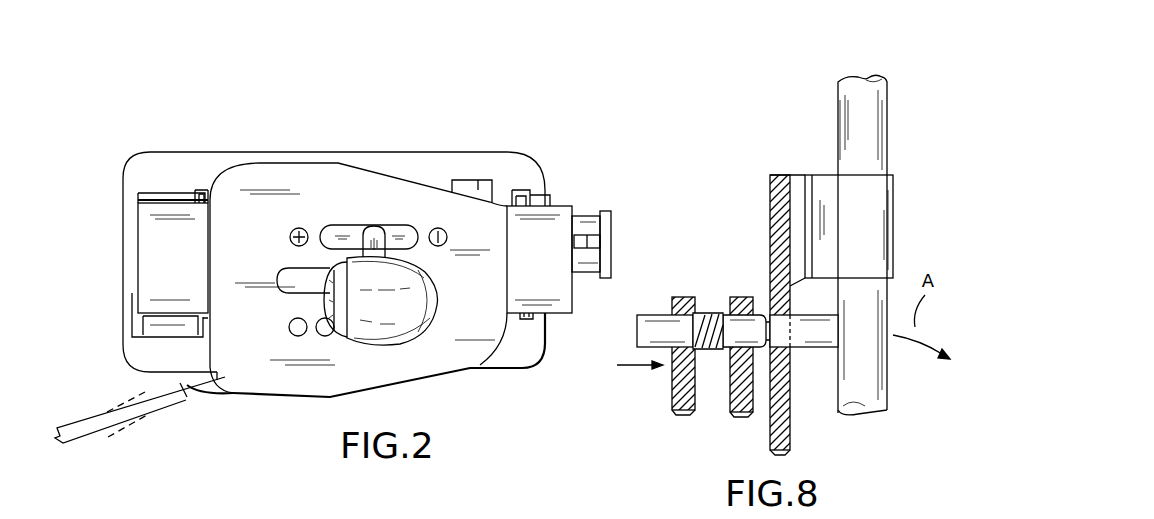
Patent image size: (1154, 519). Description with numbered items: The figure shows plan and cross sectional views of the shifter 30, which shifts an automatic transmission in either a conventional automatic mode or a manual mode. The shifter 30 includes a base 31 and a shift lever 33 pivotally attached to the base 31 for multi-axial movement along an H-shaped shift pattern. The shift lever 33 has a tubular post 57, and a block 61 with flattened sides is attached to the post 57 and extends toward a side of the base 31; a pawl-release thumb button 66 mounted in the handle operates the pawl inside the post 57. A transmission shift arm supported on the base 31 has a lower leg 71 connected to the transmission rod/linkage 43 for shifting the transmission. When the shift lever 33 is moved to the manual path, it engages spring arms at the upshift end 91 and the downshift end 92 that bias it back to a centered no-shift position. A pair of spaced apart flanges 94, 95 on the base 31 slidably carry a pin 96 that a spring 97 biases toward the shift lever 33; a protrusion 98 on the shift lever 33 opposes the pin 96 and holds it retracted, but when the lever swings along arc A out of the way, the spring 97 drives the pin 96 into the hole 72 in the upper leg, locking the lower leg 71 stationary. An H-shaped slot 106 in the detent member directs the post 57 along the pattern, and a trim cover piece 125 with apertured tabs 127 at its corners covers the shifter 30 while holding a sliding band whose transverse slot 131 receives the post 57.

In FIG. 2, the shifter 30 is at (232, 106).
In FIG. 2, the base 31 is at (508, 144).
In FIG. 2, the shift lever 33 is at (432, 328).
In FIG. 8, the shift lever 33 is at (838, 108).
In FIG. 2, the transmission rod/linkage 43 is at (170, 410).
In FIG. 8, the tubular post 57 is at (888, 118).
In FIG. 8, the block 61 is at (805, 173).
In FIG. 2, the pawl-release thumb button 66 is at (293, 308).
In FIG. 8, the lower leg 71 is at (769, 427).
In FIG. 8, the panel wall 72 is at (785, 223).
In FIG. 2, the upshift end 91 is at (330, 233).
In FIG. 2, the downshift end 92 is at (407, 232).
In FIG. 8, the flange 94 is at (672, 393).
In FIG. 8, the flange 95 is at (730, 400).
In FIG. 8, the pin 96 is at (648, 313).
In FIG. 8, the spring 97 is at (713, 311).
In FIG. 8, the protrusion 98 is at (822, 330).
In FIG. 2, the H-shaped slot 106 is at (290, 282).
In FIG. 2, the trim cover piece 125 is at (407, 387).
In FIG. 2, the apertured tabs 127 is at (200, 190).
In FIG. 2, the transverse slot 131 is at (375, 228).